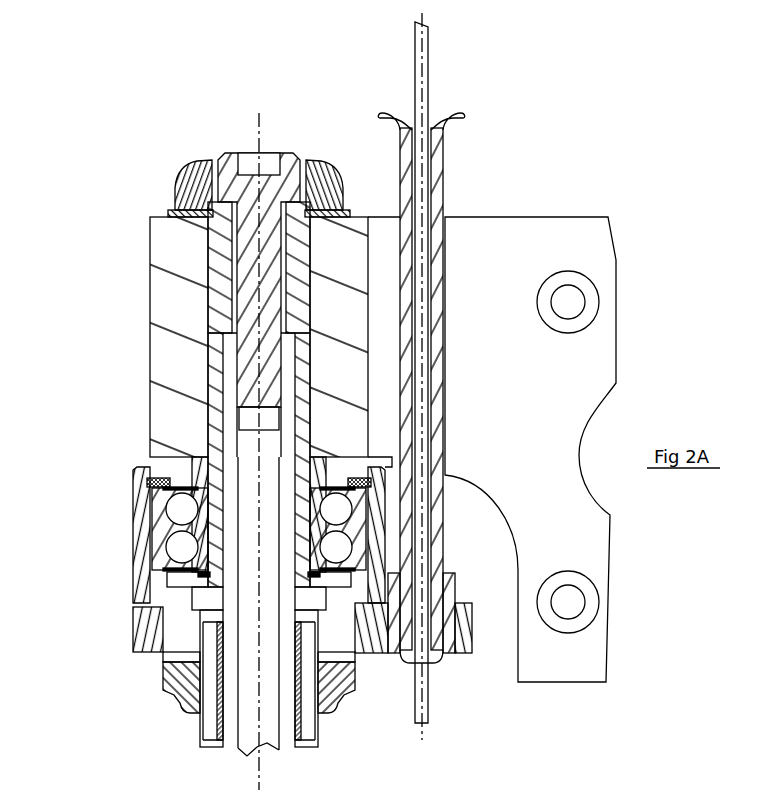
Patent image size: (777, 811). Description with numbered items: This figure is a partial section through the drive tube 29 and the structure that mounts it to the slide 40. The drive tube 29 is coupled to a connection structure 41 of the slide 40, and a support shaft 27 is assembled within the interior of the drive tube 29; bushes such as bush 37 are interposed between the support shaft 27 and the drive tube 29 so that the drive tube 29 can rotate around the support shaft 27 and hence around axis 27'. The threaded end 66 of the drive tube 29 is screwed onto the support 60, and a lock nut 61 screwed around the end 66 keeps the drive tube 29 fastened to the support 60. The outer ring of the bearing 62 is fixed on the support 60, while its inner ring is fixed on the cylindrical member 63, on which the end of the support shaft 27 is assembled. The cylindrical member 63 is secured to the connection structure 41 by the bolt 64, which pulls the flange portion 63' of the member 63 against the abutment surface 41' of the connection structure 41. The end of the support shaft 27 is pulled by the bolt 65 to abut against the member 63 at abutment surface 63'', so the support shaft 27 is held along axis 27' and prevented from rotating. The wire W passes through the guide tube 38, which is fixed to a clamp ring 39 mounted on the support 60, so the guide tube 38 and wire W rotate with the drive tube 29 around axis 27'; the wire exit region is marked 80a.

The axis 27' is at (246, 258).
The bolt 64 is at (193, 172).
The bolt 65 is at (282, 168).
The wire W is at (423, 77).
The guide tube 38 is at (438, 172).
The slide 40 is at (560, 237).
The connection structure 41 is at (227, 342).
The abutment surface 63'' is at (181, 267).
The flange portion 63' is at (189, 460).
The abutment surface 41' is at (174, 512).
The cylindrical member 63 is at (203, 517).
The support 60 is at (140, 502).
The bearing 62 is at (173, 552).
The threaded end 66 is at (180, 652).
The lock nut 61 is at (177, 696).
The drive tube 29 is at (207, 731).
The bush 37 is at (217, 739).
The support shaft 27 is at (276, 632).
The clamp ring 39 is at (373, 642).
The wire end 80a is at (433, 737).